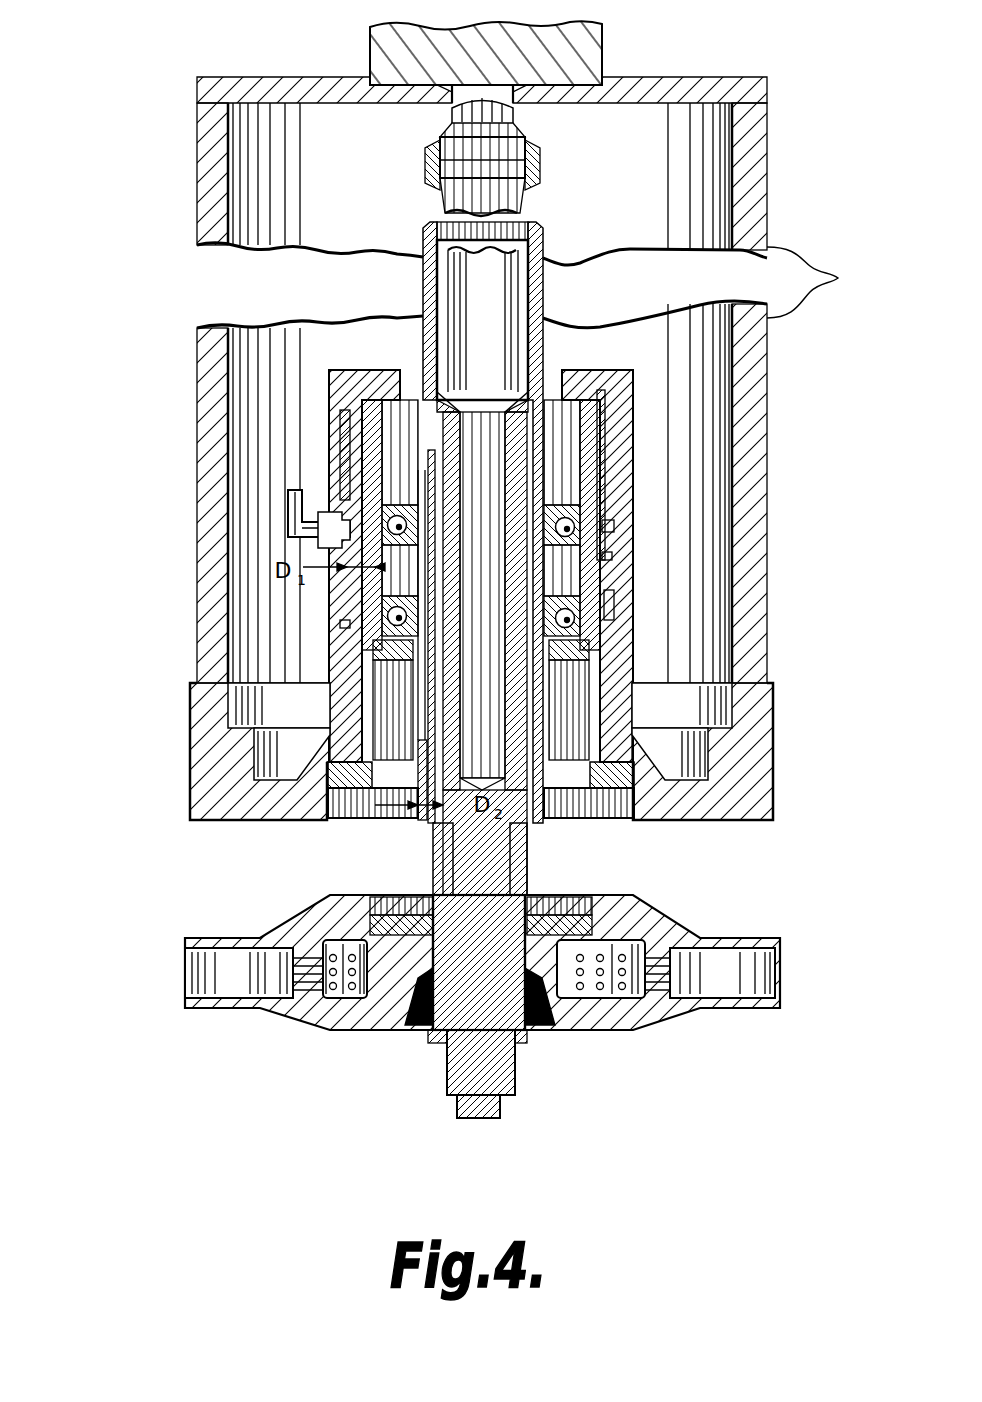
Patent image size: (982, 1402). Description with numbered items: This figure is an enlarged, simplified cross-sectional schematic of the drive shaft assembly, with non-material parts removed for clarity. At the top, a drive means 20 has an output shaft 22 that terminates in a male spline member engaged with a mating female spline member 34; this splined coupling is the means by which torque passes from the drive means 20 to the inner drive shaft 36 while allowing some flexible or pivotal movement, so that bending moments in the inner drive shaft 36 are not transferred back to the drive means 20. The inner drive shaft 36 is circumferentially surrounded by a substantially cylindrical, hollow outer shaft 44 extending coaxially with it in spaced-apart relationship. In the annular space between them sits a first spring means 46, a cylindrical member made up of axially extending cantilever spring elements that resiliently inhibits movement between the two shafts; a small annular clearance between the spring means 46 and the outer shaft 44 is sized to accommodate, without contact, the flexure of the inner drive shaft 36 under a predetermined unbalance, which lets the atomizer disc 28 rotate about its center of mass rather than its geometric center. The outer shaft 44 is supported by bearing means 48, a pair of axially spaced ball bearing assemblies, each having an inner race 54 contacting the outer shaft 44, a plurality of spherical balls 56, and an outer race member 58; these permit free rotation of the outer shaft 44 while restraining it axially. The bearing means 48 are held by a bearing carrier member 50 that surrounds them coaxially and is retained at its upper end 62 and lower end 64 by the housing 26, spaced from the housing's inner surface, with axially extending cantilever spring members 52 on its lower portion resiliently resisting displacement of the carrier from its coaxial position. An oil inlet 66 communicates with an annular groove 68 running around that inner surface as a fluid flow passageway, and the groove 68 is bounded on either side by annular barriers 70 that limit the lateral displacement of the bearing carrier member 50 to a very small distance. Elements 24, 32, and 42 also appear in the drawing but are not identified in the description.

The drive means 20 is at (603, 45).
The output shaft 22 is at (440, 114).
The housing 24 is at (175, 339).
The housing 26 is at (813, 282).
The atomizer disc 28 is at (670, 1016).
The adjusting nut 32 is at (530, 150).
The spline member 34 is at (541, 175).
The inner drive shaft 36 is at (545, 256).
The valve shaft 42 is at (500, 1108).
The outer shaft 44 is at (545, 301).
The first spring means 46 is at (528, 840).
The bearing means 48 is at (360, 610).
The bearing carrier member 50 is at (329, 430).
The cantilever spring members 52 is at (242, 700).
The inner race 54 is at (578, 670).
The spherical balls 56 is at (255, 760).
The outer race member 58 is at (362, 650).
The upper end 62 is at (355, 372).
The lower end 64 is at (345, 815).
The oil inlet 66 is at (288, 522).
The annular groove 68 is at (332, 545).
The annular barriers 70 is at (345, 498).